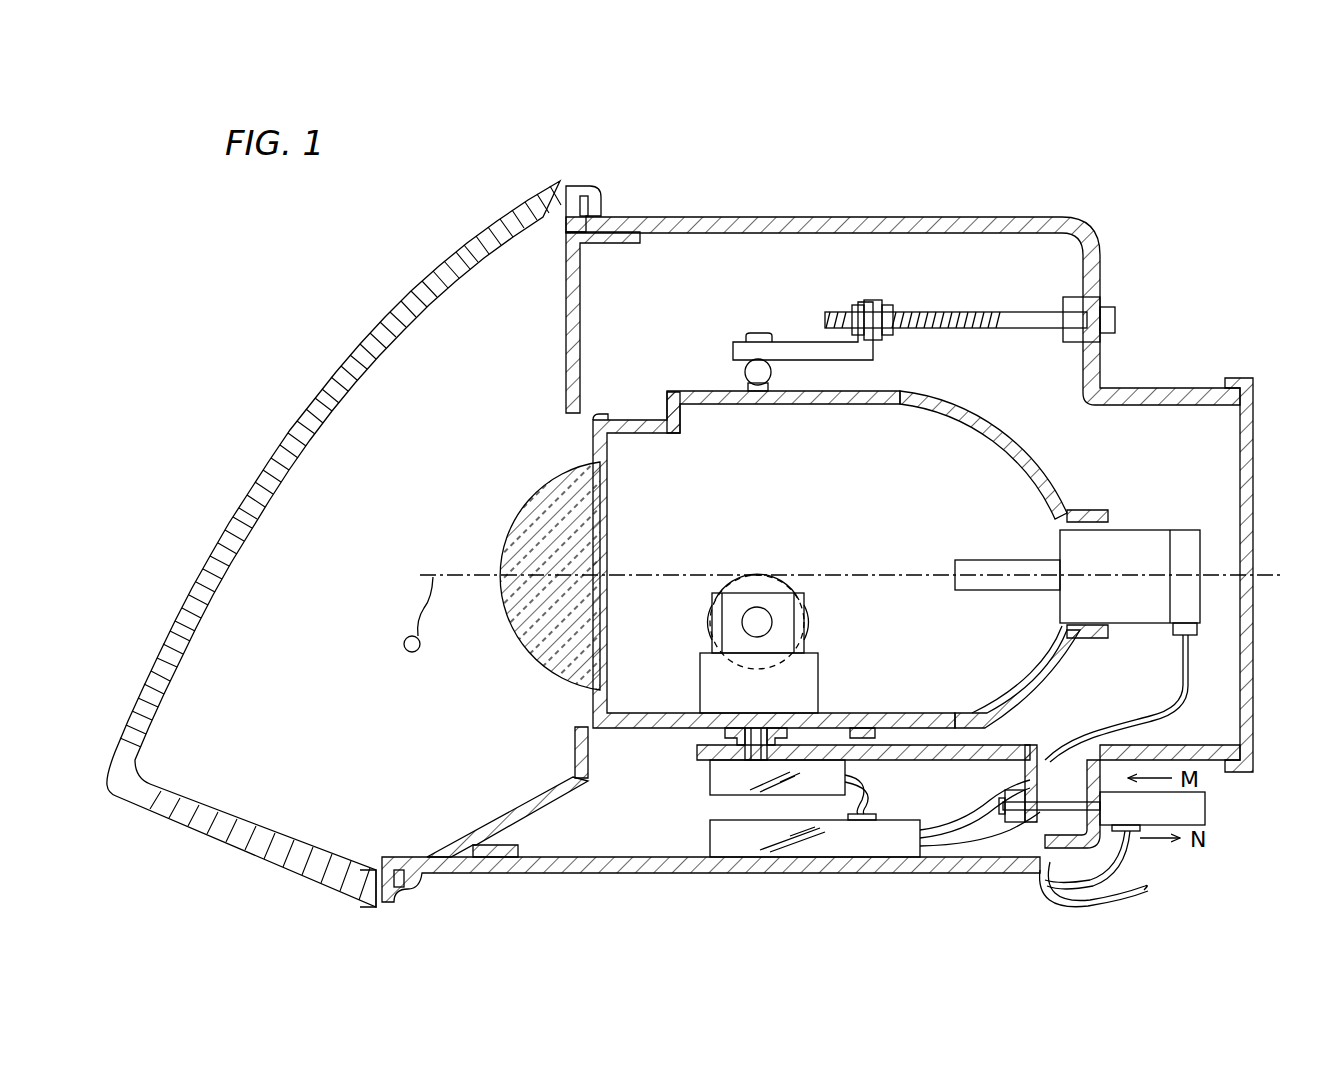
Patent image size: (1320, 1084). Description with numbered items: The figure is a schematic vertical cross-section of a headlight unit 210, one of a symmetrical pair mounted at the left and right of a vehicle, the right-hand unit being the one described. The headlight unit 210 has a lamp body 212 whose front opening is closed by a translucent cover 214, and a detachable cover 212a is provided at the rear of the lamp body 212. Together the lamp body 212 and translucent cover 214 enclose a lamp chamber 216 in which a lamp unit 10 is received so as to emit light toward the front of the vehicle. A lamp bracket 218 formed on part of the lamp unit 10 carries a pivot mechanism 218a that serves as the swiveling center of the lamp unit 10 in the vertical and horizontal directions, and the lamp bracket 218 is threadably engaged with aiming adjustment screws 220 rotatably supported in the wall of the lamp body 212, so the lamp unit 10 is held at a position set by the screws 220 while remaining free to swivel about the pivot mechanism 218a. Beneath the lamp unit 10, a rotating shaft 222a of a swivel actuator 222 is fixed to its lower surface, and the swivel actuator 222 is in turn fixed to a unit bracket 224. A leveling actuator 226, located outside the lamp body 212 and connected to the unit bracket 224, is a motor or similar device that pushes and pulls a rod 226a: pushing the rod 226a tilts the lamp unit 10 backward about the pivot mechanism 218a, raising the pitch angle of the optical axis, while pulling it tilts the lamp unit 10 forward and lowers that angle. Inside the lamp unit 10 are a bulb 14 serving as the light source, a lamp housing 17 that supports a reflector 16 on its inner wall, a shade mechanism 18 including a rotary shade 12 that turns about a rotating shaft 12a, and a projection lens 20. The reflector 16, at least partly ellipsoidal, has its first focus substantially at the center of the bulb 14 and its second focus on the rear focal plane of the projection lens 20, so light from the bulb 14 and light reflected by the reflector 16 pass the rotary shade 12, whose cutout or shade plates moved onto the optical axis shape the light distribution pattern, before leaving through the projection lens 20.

The lamp unit 10 is at (648, 418).
The rotary shade 12 is at (767, 588).
The rotating shaft 12a is at (762, 627).
The bulb 14 is at (990, 572).
The reflector 16 is at (916, 406).
The lamp housing 17 is at (1010, 442).
The shade mechanism 18 is at (756, 572).
The projection lens 20 is at (526, 503).
The headlight unit 210 is at (936, 214).
The lamp body 212 is at (782, 217).
The detachable cover 212a is at (1235, 378).
The translucent cover 214 is at (394, 330).
The lamp chamber 216 is at (510, 369).
The lamp bracket 218 is at (806, 346).
The pivot mechanism 218a is at (746, 372).
The aiming adjustment screws 220 is at (1022, 320).
The swivel actuator 222 is at (718, 774).
The rotating shaft 222a is at (748, 740).
The unit bracket 224 is at (900, 752).
The leveling actuator 226 is at (1198, 812).
The rod 226a is at (1053, 804).